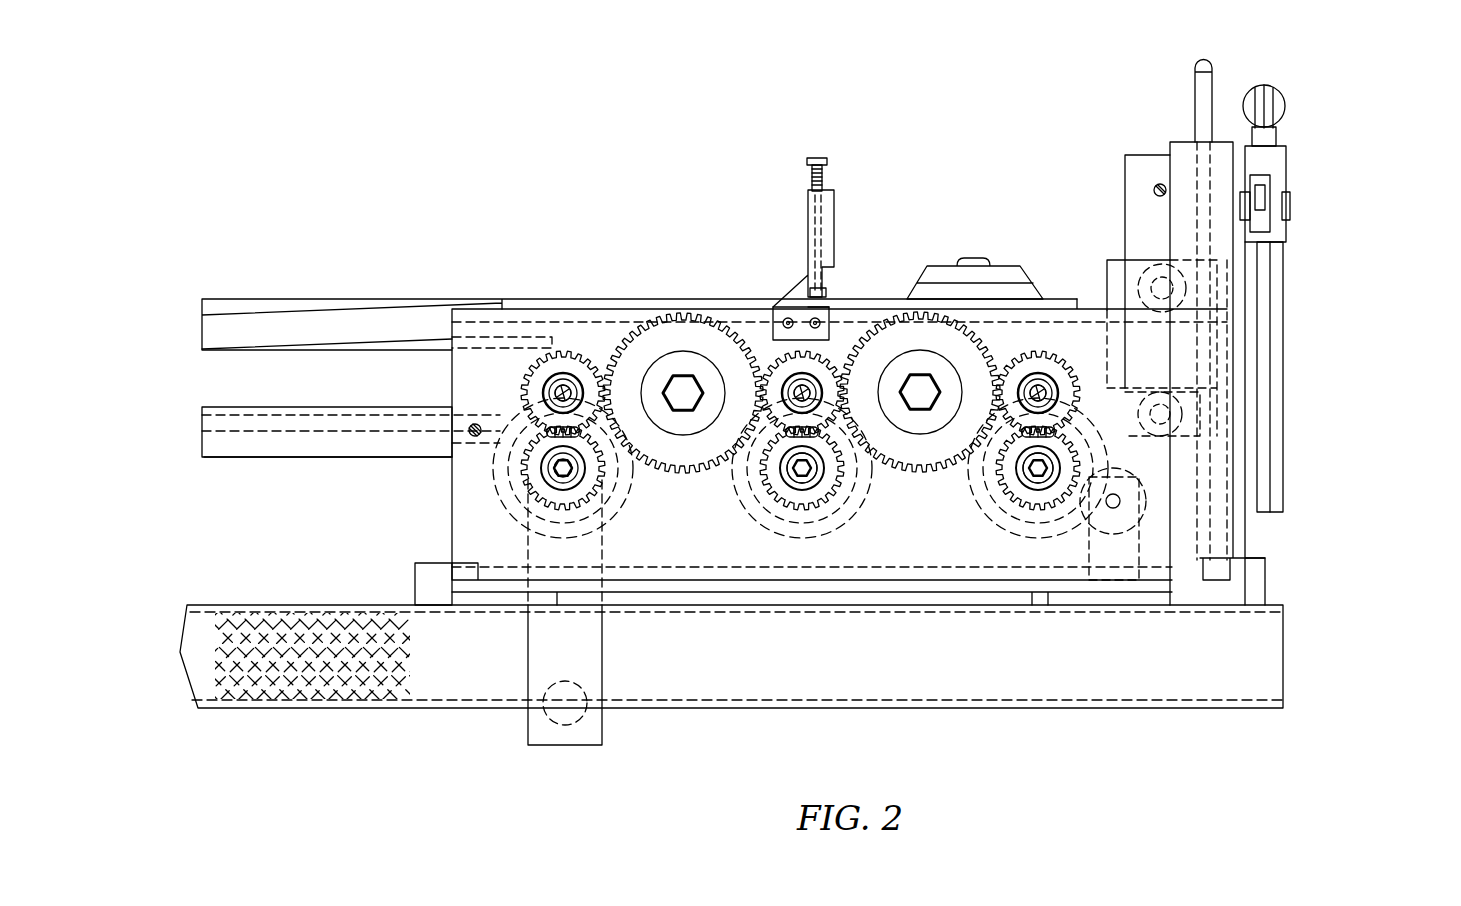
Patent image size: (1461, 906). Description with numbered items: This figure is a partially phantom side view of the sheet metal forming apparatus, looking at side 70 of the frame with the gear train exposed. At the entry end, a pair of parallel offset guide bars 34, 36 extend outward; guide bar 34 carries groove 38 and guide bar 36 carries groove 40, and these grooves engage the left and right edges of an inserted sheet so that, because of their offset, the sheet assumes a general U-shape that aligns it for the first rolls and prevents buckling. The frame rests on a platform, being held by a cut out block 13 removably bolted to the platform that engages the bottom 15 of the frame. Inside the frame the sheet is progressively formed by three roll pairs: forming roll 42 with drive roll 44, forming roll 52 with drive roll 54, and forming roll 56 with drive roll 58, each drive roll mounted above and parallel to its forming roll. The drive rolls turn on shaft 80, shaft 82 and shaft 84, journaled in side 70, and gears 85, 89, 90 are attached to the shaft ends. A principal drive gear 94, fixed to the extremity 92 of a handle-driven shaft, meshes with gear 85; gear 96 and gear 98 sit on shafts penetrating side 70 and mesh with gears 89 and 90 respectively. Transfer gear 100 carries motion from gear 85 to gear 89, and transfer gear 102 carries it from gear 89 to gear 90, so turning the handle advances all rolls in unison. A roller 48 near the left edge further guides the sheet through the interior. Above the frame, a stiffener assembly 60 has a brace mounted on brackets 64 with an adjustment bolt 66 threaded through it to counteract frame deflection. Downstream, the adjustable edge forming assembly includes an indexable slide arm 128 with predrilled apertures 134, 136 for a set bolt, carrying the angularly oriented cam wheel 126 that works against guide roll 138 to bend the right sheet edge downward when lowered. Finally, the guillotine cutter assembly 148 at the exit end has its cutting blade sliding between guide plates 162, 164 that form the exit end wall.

The guide bar 34 is at (275, 300).
The groove 38 is at (228, 333).
The groove 40 is at (228, 423).
The guide bar 36 is at (298, 440).
The side 70 is at (716, 506).
The cut out block 13 is at (422, 583).
The bottom 15 is at (482, 595).
The principal drive gear 94 is at (563, 478).
The gear 85 is at (565, 365).
The shaft 80 is at (590, 368).
The drive roll 44 is at (523, 466).
The extremity 92 is at (560, 477).
The forming roll 42 is at (621, 508).
The transfer gear 100 is at (665, 345).
The gear 89 is at (776, 365).
The shaft 82 is at (820, 380).
The drive roll 54 is at (771, 520).
The gear 96 is at (832, 490).
The forming roll 52 is at (845, 523).
The transfer gear 102 is at (970, 352).
The gear 90 is at (1050, 372).
The shaft 84 is at (1045, 385).
The drive roll 58 is at (1002, 520).
The gear 98 is at (1008, 483).
The forming roll 56 is at (1023, 527).
The adjustment bolt 66 is at (818, 156).
The stiffener assembly 60 is at (850, 206).
The bracket 64 is at (800, 298).
The roller 48 is at (952, 268).
The indexable slide arm 128 is at (1135, 183).
The aperture 134 is at (1158, 184).
The aperture 136 is at (1165, 285).
The cam wheel 126 is at (1180, 430).
The guide roll 138 is at (1143, 497).
The guillotine cutter assembly 148 is at (1302, 355).
The guide plate 162 is at (1250, 505).
The guide plate 164 is at (1263, 478).